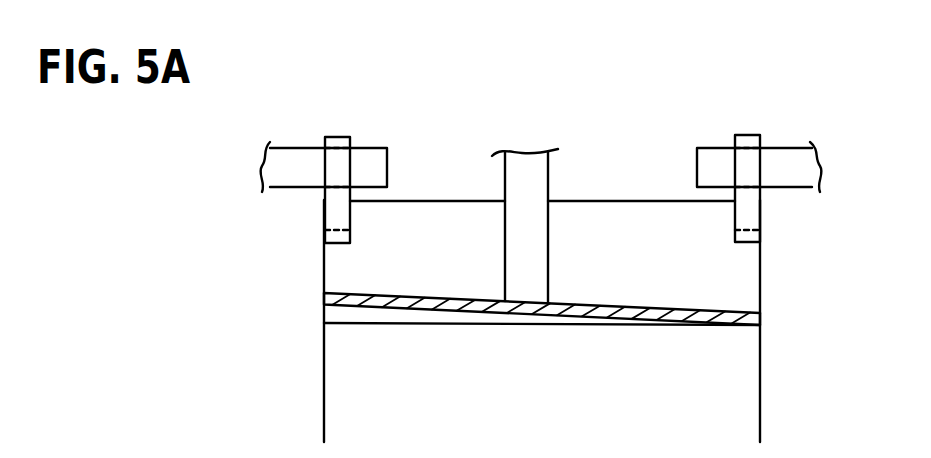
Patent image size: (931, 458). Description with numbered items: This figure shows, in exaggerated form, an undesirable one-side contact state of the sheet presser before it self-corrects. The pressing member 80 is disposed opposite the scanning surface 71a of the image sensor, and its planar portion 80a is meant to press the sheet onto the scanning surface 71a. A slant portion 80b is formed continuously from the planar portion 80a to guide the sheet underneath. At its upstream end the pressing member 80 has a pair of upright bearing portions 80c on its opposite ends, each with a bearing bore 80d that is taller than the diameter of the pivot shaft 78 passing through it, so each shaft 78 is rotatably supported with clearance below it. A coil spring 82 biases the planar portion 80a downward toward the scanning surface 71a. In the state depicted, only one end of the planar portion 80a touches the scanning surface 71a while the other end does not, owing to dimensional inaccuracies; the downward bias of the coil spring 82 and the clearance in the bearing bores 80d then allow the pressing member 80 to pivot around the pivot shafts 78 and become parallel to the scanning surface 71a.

The pressing member 80 is at (550, 117).
The planar portion 80a is at (397, 304).
The slant portion 80b is at (611, 225).
The bearing portion 80c is at (338, 137).
The bearing bore 80d is at (333, 208).
The pivot shaft 78 is at (369, 157).
The coil spring 82 is at (523, 260).
The scanning surface 71a is at (473, 326).